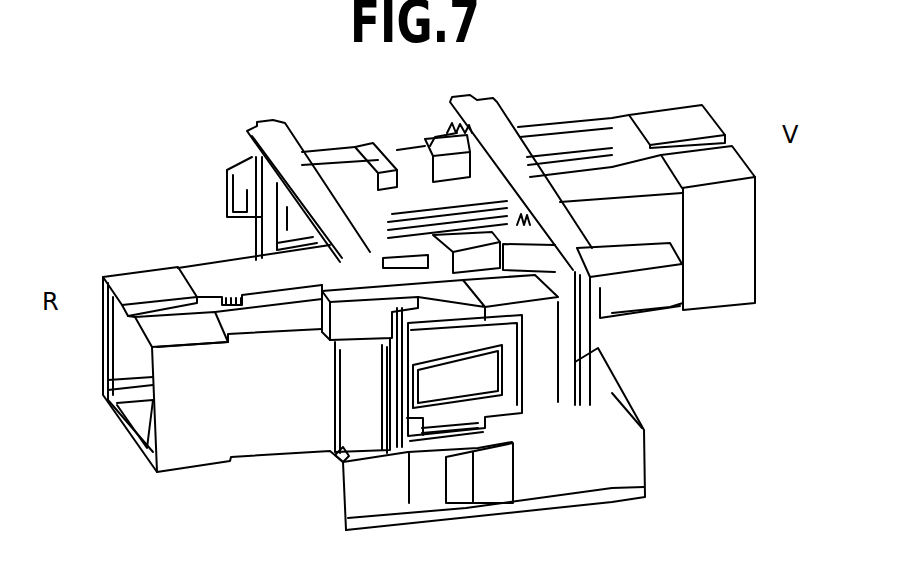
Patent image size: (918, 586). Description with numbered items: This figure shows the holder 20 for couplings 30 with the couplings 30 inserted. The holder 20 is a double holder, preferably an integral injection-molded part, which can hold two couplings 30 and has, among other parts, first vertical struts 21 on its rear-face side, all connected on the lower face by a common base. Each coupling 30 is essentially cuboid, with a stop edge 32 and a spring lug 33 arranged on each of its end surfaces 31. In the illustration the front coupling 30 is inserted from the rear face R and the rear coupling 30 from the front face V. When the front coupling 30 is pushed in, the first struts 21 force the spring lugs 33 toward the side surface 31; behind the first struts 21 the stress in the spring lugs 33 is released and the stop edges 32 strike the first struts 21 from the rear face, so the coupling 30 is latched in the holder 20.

The holder 20 is at (662, 405).
The first vertical strut 21 is at (401, 415).
The coupling 30 is at (208, 402).
The end surface 31 is at (270, 442).
The stop edge 32 is at (360, 420).
The spring lug 33 is at (457, 382).